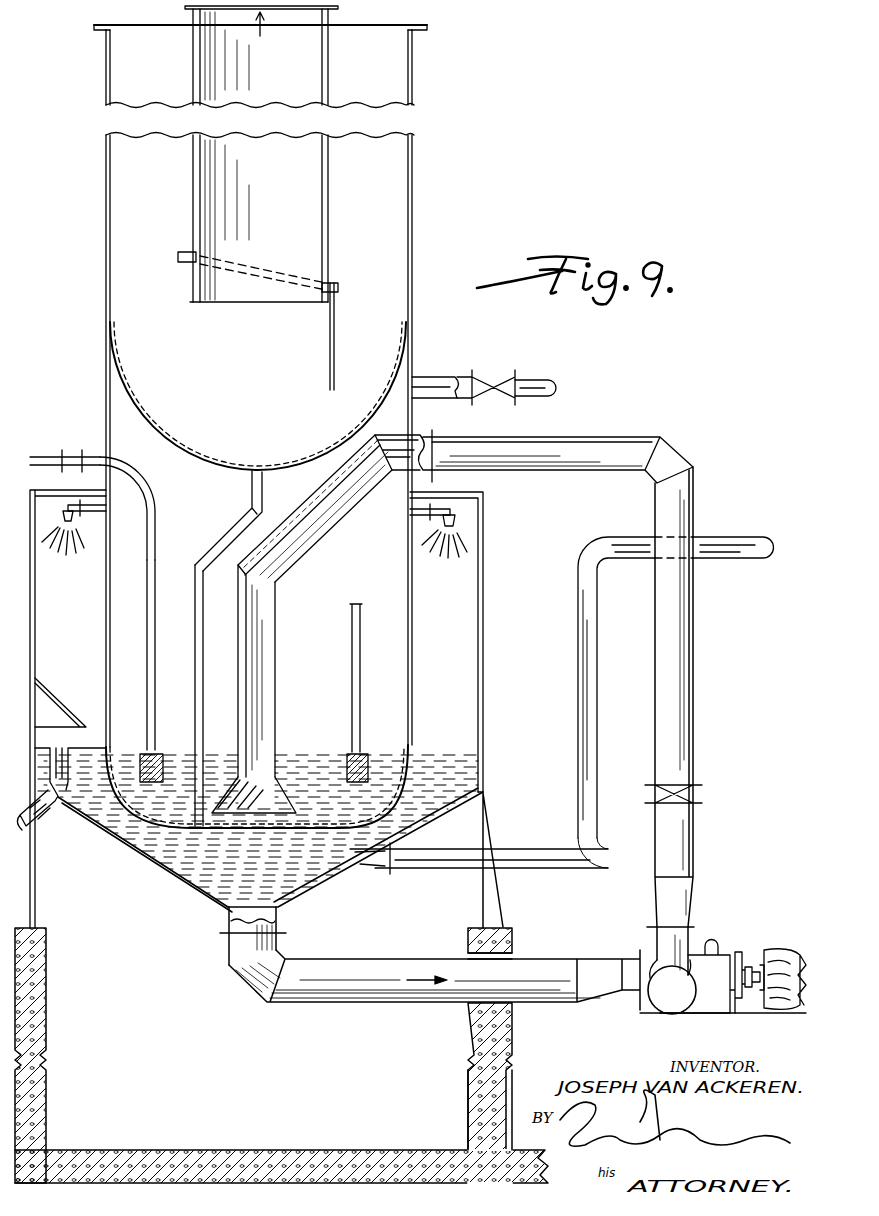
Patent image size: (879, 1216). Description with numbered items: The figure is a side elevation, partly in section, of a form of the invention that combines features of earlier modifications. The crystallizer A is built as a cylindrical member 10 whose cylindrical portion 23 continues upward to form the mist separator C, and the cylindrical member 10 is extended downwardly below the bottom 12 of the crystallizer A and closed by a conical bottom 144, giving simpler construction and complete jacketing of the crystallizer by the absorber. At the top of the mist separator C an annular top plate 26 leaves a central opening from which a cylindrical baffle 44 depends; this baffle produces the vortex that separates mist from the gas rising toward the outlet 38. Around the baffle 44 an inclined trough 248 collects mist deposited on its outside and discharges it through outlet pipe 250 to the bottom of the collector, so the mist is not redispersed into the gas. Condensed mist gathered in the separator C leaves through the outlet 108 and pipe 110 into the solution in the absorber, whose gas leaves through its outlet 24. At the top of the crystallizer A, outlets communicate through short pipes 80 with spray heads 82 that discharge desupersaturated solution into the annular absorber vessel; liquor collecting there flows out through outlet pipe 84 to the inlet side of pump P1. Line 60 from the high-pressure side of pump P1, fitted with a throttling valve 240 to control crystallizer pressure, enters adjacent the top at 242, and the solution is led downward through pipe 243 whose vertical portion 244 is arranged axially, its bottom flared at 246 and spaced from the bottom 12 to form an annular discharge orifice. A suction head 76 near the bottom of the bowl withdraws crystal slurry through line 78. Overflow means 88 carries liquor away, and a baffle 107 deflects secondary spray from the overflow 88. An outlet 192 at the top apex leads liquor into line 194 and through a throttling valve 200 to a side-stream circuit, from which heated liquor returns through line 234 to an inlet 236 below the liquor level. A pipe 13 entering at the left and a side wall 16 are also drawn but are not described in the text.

The cylindrical member 10 is at (105, 645).
The bottom of the crystallizer 12 is at (165, 905).
The liquid supply pipe 13 is at (28, 470).
The tank side wall 16 is at (36, 622).
The cylindrical portion 23 is at (412, 192).
The outlet of the absorber 24 is at (296, 816).
The annular top plate 26 is at (400, 28).
The outlet 38 is at (186, 13).
The cylindrical baffle 44 is at (330, 203).
The line 60 is at (692, 708).
The suction head 76 is at (350, 756).
The line 78 is at (352, 633).
The outlet pipes 80 is at (105, 520).
The spray heads 82 is at (456, 516).
The outlet pipe 84 is at (346, 1000).
The overflow means 88 is at (62, 810).
The baffle 107 is at (70, 690).
The outlet 108 is at (258, 470).
The pipe 110 is at (194, 696).
The conical bottom 144 is at (132, 860).
The outlet 192 is at (418, 380).
The line 194 is at (458, 378).
The throttling valve 200 is at (520, 382).
The line 234 is at (740, 542).
The inlet 236 is at (384, 870).
The throttling valve 240 is at (703, 791).
The inlet 242 is at (422, 434).
The pipe 243 is at (318, 552).
The vertical portion 244 is at (278, 668).
The flared bottom 246 is at (284, 790).
The trough 248 is at (190, 252).
The outlet pipe 250 is at (336, 326).
The pump P1 is at (722, 958).
The crystallizer A is at (104, 596).
The mist separator C is at (105, 243).